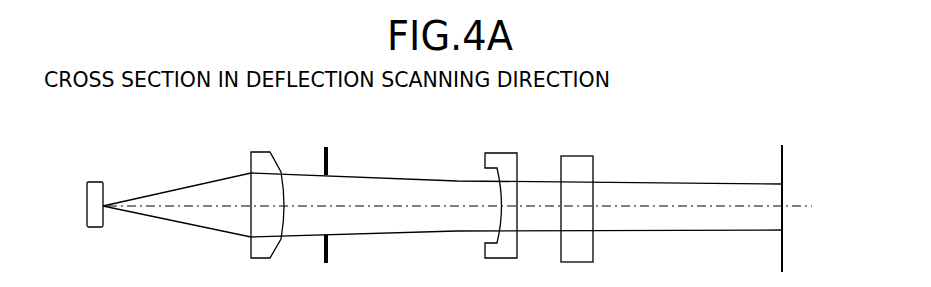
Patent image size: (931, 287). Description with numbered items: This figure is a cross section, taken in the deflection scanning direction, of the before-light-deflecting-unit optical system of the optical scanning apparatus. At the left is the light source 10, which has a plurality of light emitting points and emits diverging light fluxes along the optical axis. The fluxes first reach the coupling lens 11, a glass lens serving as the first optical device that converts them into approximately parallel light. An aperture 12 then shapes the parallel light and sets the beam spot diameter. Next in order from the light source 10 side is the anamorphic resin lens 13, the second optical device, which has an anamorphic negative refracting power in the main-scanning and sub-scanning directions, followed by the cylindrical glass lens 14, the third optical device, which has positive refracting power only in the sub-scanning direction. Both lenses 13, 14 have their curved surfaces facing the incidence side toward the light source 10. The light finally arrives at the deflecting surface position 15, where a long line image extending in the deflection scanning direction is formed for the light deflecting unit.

The light source 10 is at (93, 183).
The coupling lens 11 is at (257, 158).
The aperture stop 12 is at (327, 148).
The anamorphic resin lens 13 is at (506, 158).
The cylindrical glass lens 14 is at (574, 161).
The scanned surface 15 is at (782, 146).